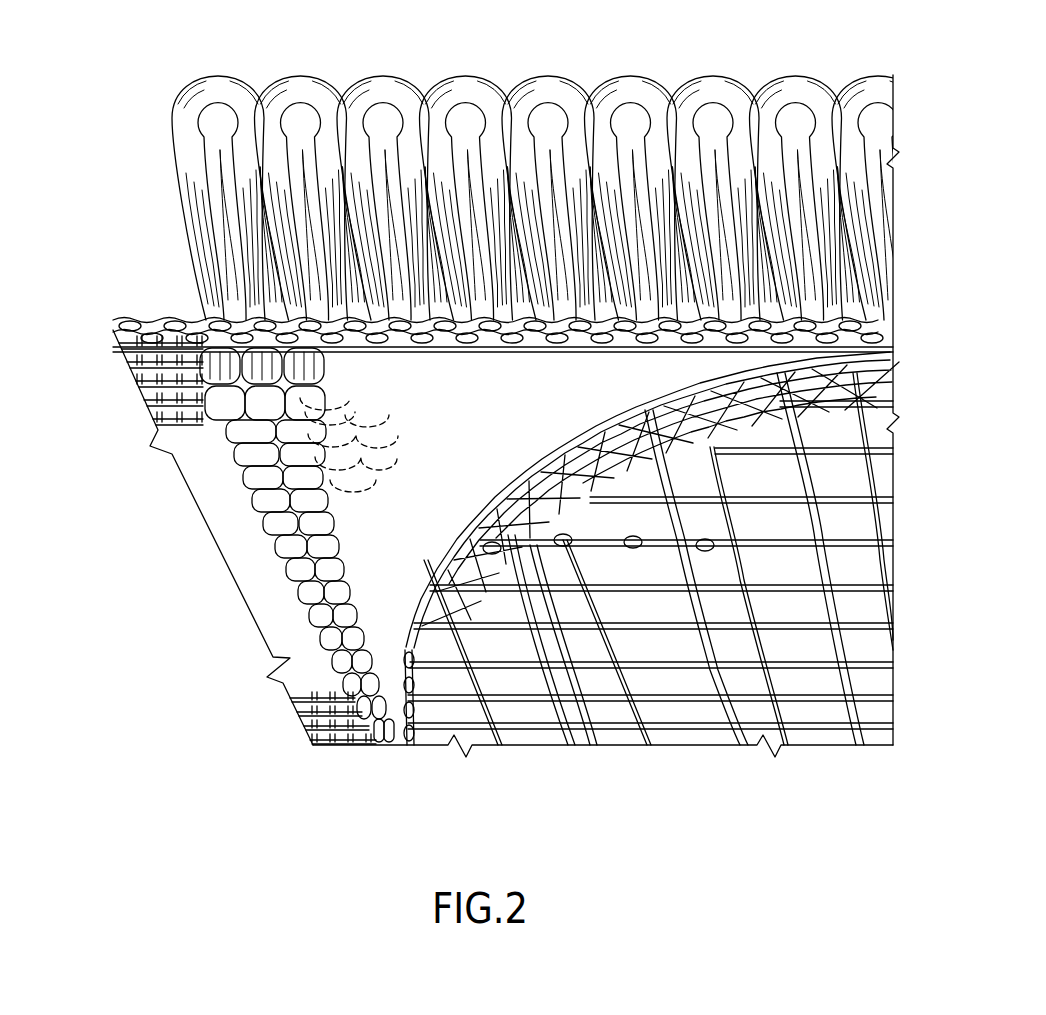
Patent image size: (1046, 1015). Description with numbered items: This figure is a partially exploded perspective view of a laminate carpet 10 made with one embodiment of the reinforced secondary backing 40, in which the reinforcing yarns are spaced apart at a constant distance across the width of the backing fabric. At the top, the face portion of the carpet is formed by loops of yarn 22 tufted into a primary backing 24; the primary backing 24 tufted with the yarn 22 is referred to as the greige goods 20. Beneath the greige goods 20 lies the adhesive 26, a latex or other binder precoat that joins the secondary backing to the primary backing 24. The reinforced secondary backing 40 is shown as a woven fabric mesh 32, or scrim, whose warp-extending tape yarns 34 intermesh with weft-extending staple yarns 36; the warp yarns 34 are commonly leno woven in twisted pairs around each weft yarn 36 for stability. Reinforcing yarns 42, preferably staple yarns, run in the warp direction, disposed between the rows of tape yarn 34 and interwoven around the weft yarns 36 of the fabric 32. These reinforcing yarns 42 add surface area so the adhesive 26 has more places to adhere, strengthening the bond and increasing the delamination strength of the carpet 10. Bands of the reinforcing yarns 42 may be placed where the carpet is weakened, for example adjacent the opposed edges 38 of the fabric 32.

The laminate carpet 10 is at (137, 115).
The greige goods 20 is at (197, 306).
The yarn 22 is at (385, 82).
The primary backing 24 is at (150, 324).
The adhesive 26 is at (340, 510).
The woven fabric mesh 32 is at (875, 400).
The warp yarns 34 is at (650, 735).
The weft yarns 36 is at (858, 588).
The edge 38 is at (403, 748).
The reinforced secondary backing 40 is at (453, 537).
The reinforcing yarns 42 is at (440, 543).